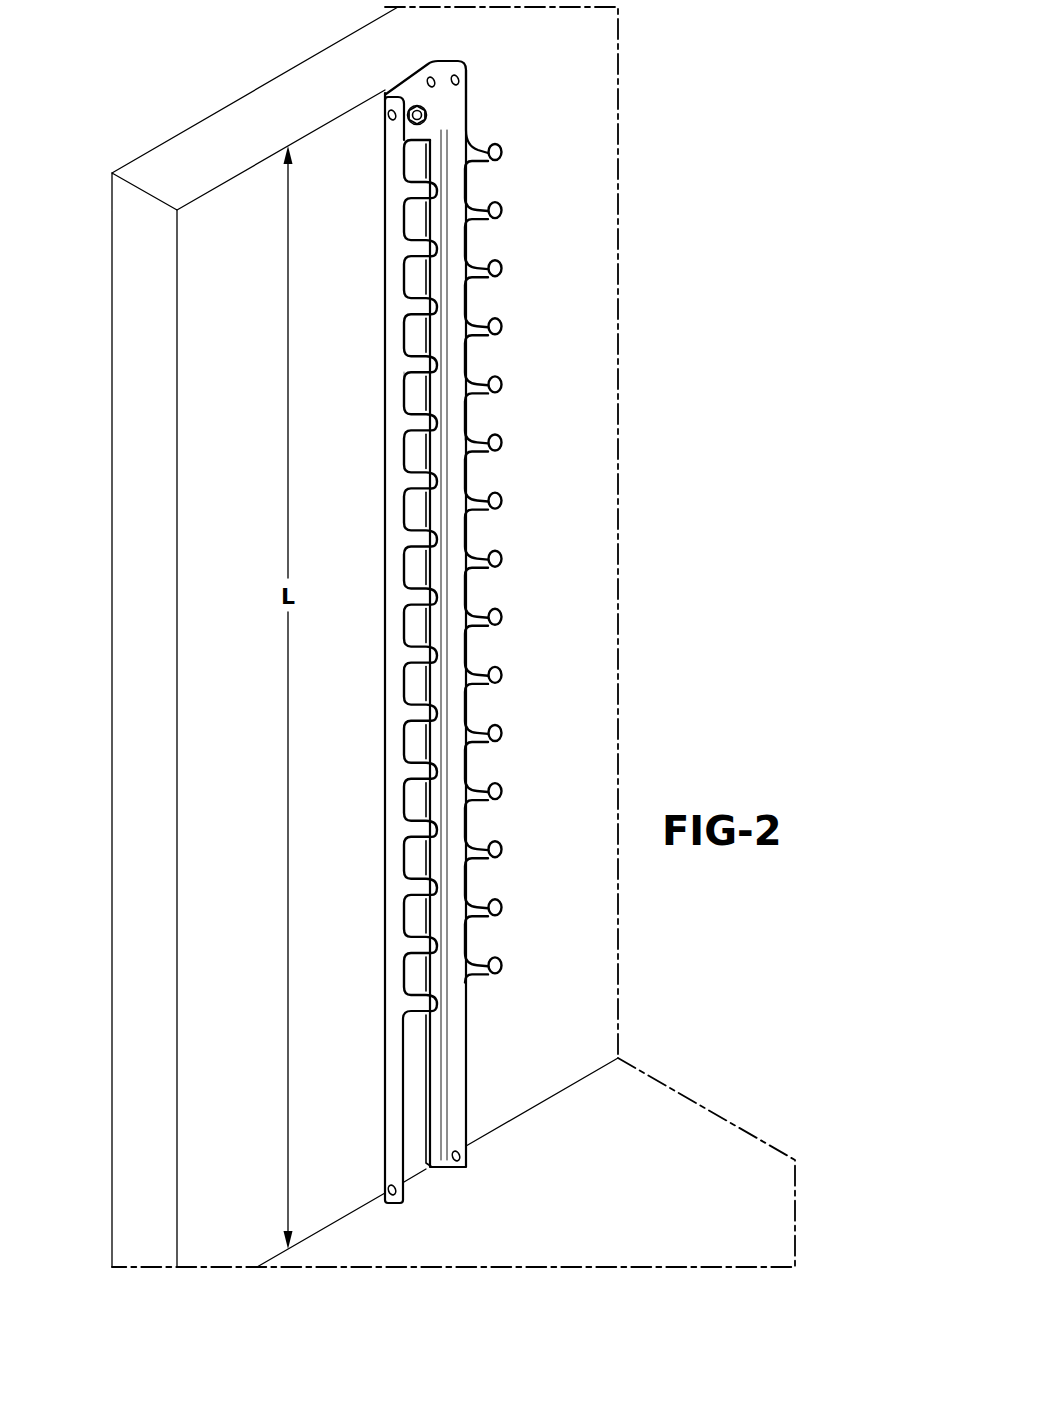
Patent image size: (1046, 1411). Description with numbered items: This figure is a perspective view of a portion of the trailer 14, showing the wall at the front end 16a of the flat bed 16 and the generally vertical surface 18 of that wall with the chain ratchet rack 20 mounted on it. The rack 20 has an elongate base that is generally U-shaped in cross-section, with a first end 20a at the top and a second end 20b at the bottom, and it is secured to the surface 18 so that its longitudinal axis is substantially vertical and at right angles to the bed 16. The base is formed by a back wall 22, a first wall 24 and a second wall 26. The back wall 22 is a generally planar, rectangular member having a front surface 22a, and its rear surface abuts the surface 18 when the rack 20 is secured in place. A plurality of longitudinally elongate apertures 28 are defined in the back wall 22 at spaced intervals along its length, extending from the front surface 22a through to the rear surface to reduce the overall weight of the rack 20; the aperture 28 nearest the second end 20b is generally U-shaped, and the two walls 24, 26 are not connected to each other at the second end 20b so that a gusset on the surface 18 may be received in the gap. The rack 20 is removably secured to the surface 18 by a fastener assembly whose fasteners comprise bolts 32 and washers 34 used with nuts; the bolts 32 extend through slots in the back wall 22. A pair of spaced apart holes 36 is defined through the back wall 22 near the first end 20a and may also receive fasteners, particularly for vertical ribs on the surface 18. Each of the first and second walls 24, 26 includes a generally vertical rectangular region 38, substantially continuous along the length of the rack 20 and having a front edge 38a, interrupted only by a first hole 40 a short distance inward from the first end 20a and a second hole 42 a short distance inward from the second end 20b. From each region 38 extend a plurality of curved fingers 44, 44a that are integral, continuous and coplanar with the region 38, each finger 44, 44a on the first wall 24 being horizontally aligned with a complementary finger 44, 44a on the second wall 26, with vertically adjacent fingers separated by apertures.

The trailer 14 is at (709, 1163).
The flat bed 16 is at (414, 720).
The front end 16a is at (186, 101).
The generally vertical surface 18 is at (578, 264).
The rack 20 is at (378, 872).
The first end 20a is at (474, 57).
The second end 20b is at (453, 1186).
The back wall 22 is at (412, 158).
The front surface 22a is at (432, 397).
The first wall 24 is at (386, 473).
The second wall 26 is at (470, 417).
The apertures 28 is at (425, 345).
The bolts 32 is at (427, 127).
The washers 34 is at (416, 104).
The holes 36 is at (391, 110).
The rectangular region 38 is at (396, 1161).
The front edge 38a is at (402, 1134).
The first hole 40 is at (385, 127).
The second hole 42 is at (462, 1163).
The curved fingers 44 is at (535, 753).
The curved finger 44a is at (504, 174).